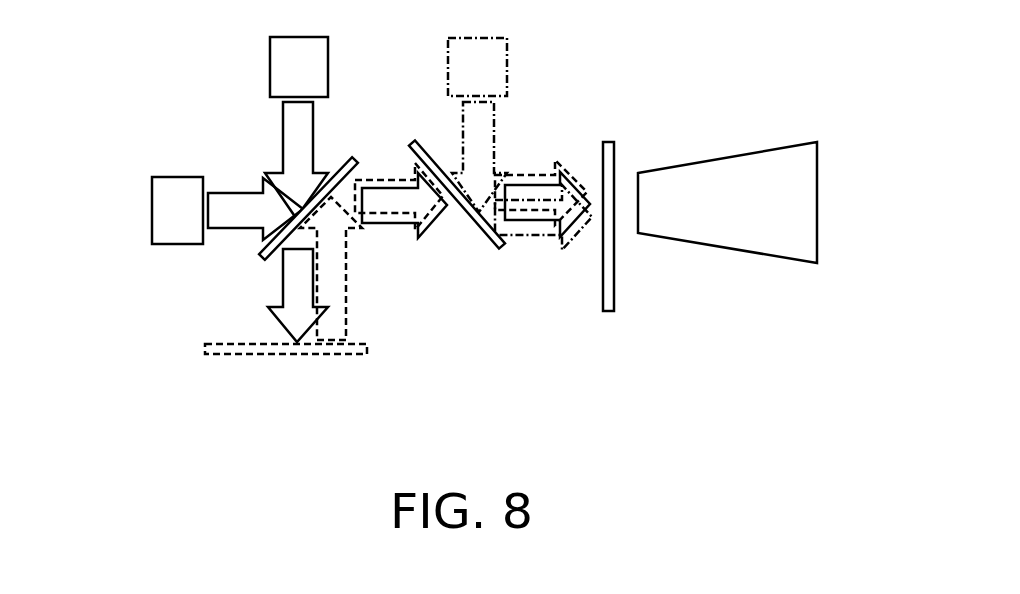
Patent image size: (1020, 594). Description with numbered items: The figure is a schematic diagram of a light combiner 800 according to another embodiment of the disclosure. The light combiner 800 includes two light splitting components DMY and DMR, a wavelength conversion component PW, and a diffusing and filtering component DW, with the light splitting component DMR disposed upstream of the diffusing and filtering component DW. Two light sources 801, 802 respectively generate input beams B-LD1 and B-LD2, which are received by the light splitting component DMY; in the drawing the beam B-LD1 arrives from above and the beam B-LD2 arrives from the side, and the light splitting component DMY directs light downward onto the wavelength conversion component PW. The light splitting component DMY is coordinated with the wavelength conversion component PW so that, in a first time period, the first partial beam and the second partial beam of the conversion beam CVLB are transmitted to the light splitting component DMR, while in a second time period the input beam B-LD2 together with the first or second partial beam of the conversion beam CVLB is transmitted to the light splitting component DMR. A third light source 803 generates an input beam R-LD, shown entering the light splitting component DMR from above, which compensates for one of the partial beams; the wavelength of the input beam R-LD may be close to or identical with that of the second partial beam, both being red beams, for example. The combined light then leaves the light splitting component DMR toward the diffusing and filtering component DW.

The light combiner 800 is at (444, 249).
The light source 801 is at (328, 63).
The light source 802 is at (152, 210).
The light source 803 is at (507, 65).
The input beam B-LD1 is at (283, 117).
The input beam B-LD2 is at (222, 193).
The conversion beam CVLB is at (388, 180).
The input beam R-LD is at (494, 138).
The light splitting component DMY is at (265, 248).
The light splitting component DMR is at (486, 234).
The diffusing and filtering component DW is at (610, 142).
The wavelength conversion component PW is at (287, 354).